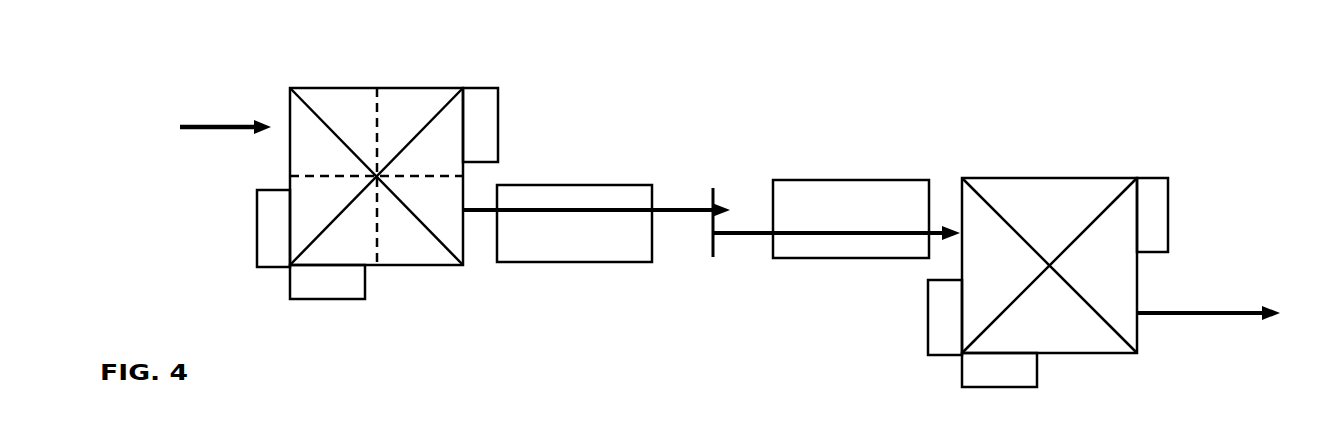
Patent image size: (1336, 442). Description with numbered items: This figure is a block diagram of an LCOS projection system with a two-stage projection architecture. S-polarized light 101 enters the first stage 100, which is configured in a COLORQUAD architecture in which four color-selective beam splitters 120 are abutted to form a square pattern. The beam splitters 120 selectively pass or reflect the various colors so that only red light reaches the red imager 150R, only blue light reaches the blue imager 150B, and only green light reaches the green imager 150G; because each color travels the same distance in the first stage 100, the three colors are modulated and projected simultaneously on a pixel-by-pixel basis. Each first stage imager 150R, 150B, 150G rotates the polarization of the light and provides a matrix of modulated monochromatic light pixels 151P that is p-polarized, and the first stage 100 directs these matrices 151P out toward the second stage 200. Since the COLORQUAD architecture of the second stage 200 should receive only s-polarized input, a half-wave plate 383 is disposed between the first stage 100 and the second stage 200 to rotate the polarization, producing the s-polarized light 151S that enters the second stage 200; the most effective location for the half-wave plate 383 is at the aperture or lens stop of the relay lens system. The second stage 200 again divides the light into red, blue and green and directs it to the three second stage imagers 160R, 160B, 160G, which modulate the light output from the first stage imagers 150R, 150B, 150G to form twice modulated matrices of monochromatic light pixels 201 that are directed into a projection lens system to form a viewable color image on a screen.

The first stage 100 is at (458, 76).
The s-polarized light 101 is at (205, 123).
The color-selective beam splitters 120 is at (412, 92).
The red imager 150R is at (498, 108).
The blue imager 150B is at (257, 243).
The green imager 150G is at (327, 299).
The matrix of modulated monochromatic light pixels 151P is at (478, 209).
The half-wave plate 383 is at (712, 187).
The S-polarized light 151S is at (743, 238).
The second stage 200 is at (1078, 111).
The red second stage imager 160R is at (1172, 195).
The blue second stage imager 160B is at (928, 320).
The green second stage imager 160G is at (988, 389).
The twice modulated matrices of monochromatic light pixels 201 is at (1225, 313).